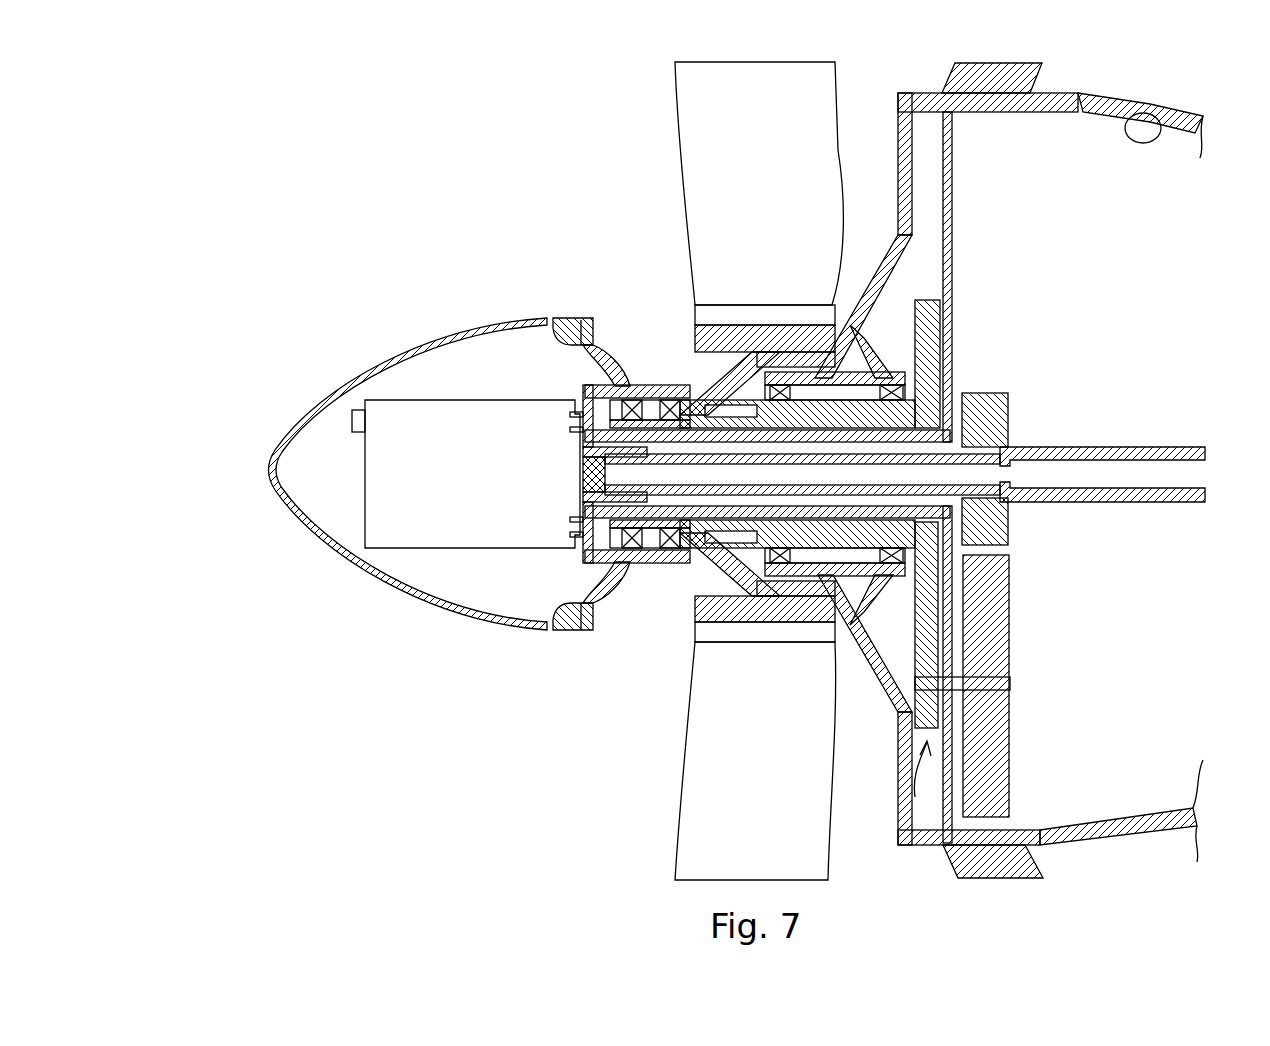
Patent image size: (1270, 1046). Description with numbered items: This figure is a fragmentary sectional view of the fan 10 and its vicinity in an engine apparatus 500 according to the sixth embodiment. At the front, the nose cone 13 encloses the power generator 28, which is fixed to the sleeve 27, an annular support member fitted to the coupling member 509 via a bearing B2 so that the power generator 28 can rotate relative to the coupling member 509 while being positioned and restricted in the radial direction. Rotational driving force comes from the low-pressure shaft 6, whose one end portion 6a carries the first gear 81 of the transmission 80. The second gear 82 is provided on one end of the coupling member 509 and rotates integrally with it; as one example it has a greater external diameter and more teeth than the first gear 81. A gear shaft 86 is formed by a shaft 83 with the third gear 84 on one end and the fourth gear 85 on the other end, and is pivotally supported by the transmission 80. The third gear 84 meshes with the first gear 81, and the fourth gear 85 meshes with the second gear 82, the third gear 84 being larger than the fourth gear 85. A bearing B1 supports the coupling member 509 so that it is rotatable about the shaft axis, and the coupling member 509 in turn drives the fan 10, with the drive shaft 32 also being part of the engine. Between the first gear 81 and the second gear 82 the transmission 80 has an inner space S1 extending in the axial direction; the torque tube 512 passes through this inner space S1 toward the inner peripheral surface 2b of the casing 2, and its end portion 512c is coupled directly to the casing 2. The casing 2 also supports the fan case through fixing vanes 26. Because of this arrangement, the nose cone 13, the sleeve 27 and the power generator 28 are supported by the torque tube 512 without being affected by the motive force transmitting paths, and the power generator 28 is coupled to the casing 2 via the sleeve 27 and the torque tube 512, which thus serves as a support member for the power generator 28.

The engine apparatus 500 is at (288, 362).
The fan 10 is at (660, 115).
The nose cone 13 is at (508, 320).
The power generator 28 is at (445, 397).
The sleeve 27 is at (616, 380).
The bearing B2 is at (614, 399).
The second gear 82 is at (922, 300).
The casing 2 is at (1072, 93).
The inner peripheral surface 2b is at (1146, 114).
The end portion 512c is at (954, 178).
The bearing B1 is at (905, 385).
The transmission 80 is at (1028, 386).
The one end portion 6a is at (1007, 418).
The low-pressure shaft 6 is at (1130, 447).
The first gear 81 is at (1010, 527).
The inner space S1 is at (960, 590).
The shaft 83 is at (962, 668).
The third gear 84 is at (1010, 750).
The fixing vanes 26 is at (1042, 860).
The torque tube 512 is at (735, 512).
The drive shaft 32 is at (707, 555).
The coupling member 509 is at (850, 580).
The fourth gear 85 is at (900, 722).
The gear shaft 86 is at (905, 790).